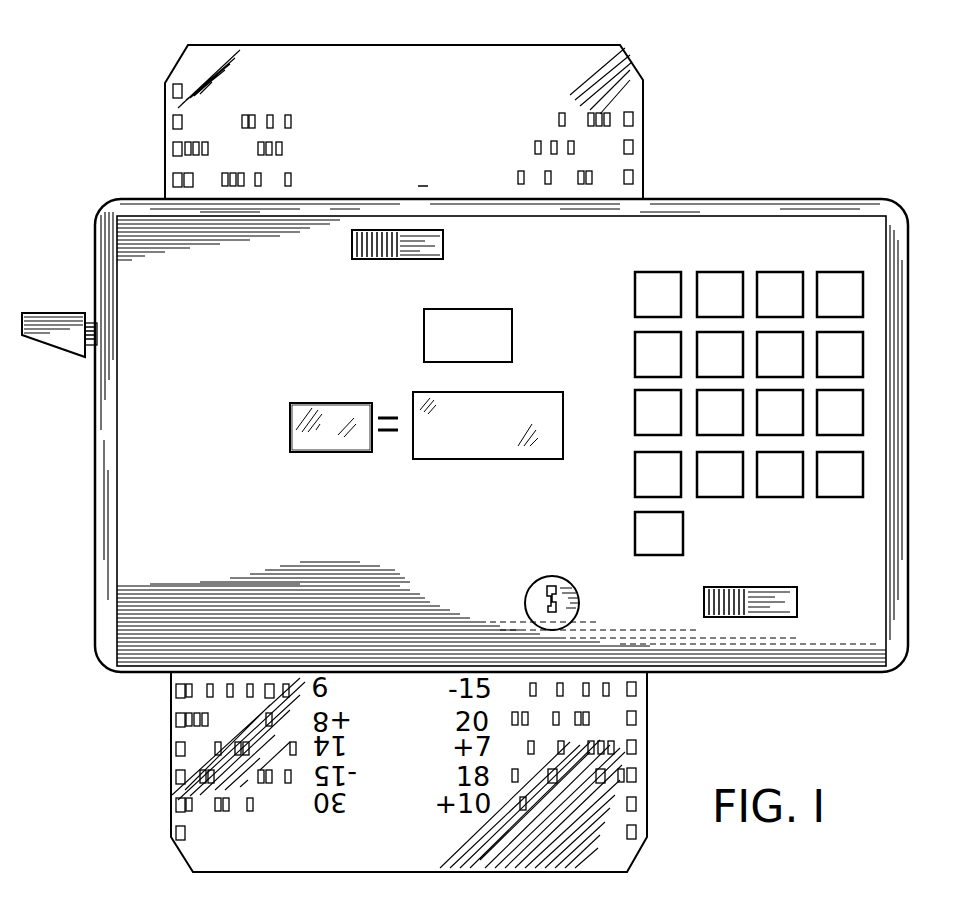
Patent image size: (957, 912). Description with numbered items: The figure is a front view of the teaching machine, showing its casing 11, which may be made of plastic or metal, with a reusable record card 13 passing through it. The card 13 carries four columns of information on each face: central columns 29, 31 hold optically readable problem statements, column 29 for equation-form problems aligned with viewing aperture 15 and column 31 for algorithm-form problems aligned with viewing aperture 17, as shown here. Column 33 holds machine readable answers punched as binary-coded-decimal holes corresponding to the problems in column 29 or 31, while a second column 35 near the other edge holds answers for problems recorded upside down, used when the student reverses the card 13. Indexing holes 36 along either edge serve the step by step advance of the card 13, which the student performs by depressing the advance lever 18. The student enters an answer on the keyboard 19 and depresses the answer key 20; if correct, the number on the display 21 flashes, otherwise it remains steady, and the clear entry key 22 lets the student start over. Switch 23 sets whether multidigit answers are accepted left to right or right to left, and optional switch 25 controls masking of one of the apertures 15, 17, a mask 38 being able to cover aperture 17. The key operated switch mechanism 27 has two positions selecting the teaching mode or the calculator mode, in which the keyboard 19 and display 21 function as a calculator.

The casing 11 is at (764, 200).
The card 13 is at (380, 46).
The viewing aperture 15 is at (306, 410).
The viewing aperture 17 is at (424, 320).
The advance lever 18 is at (44, 316).
The keyboard 19 is at (750, 485).
The answer key 20 is at (635, 530).
The display 21 is at (430, 448).
The clear entry key 22 is at (785, 490).
The switch 23 is at (704, 600).
The switch 25 is at (352, 250).
The key operated switch mechanism 27 is at (528, 590).
The column 29 is at (328, 60).
The column 31 is at (468, 60).
The column 33 is at (246, 56).
The second column 35 is at (552, 52).
The indexing holes 36 is at (633, 118).
The mask 38 is at (310, 440).